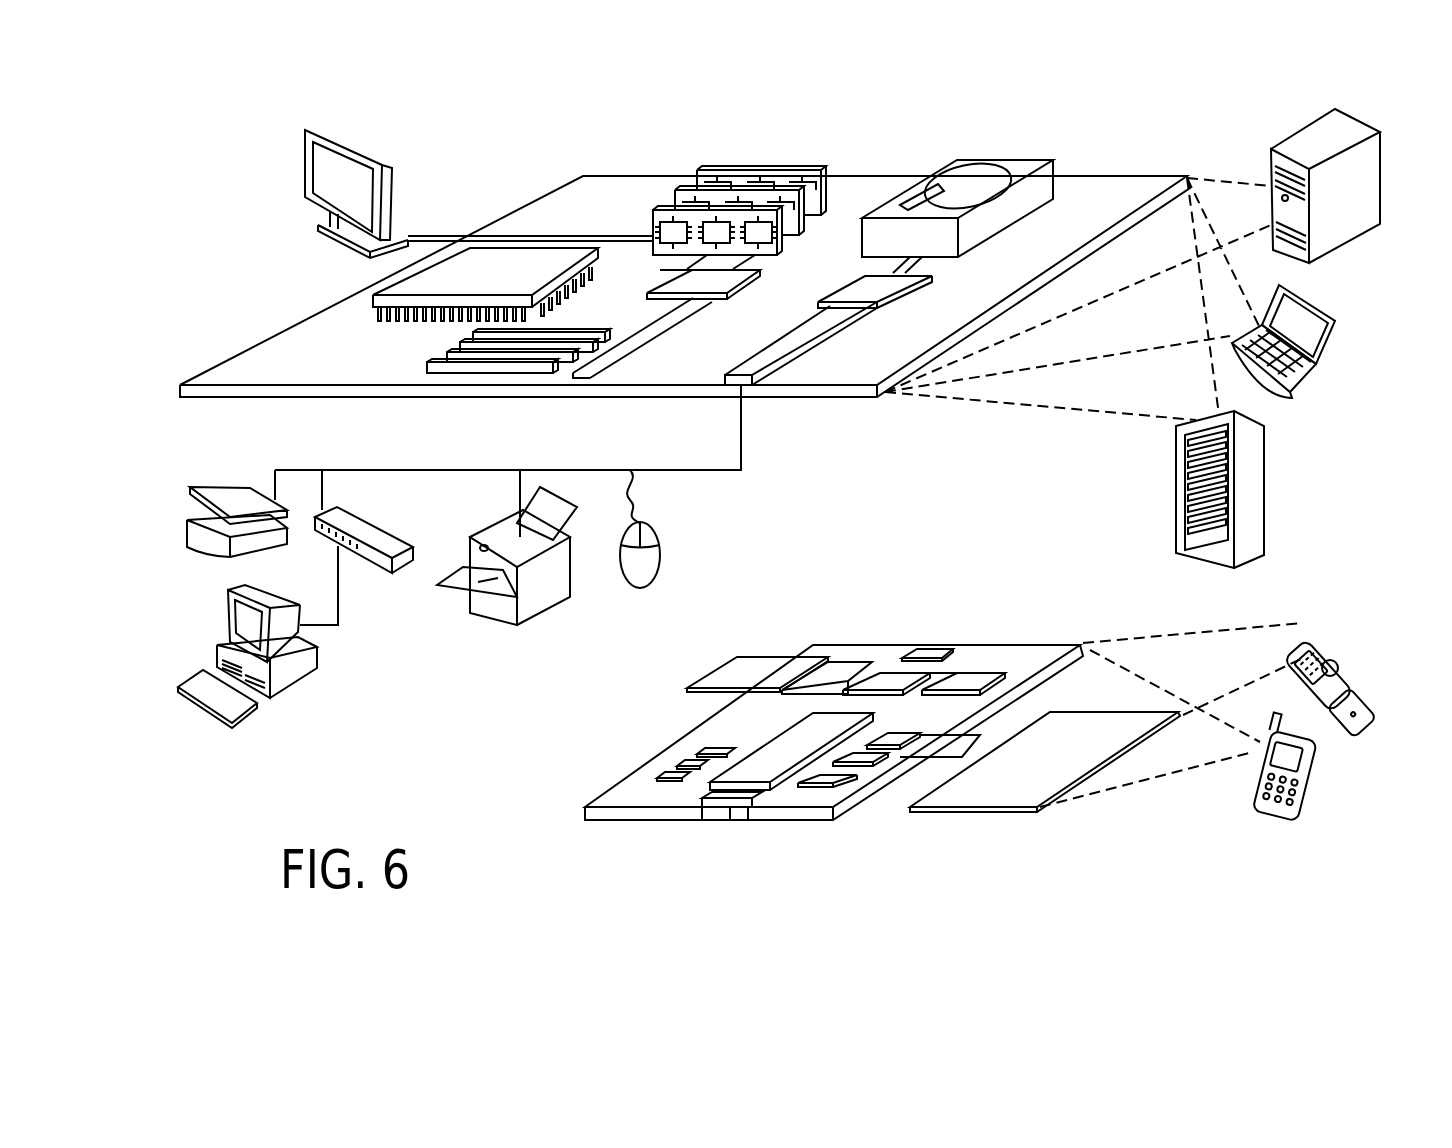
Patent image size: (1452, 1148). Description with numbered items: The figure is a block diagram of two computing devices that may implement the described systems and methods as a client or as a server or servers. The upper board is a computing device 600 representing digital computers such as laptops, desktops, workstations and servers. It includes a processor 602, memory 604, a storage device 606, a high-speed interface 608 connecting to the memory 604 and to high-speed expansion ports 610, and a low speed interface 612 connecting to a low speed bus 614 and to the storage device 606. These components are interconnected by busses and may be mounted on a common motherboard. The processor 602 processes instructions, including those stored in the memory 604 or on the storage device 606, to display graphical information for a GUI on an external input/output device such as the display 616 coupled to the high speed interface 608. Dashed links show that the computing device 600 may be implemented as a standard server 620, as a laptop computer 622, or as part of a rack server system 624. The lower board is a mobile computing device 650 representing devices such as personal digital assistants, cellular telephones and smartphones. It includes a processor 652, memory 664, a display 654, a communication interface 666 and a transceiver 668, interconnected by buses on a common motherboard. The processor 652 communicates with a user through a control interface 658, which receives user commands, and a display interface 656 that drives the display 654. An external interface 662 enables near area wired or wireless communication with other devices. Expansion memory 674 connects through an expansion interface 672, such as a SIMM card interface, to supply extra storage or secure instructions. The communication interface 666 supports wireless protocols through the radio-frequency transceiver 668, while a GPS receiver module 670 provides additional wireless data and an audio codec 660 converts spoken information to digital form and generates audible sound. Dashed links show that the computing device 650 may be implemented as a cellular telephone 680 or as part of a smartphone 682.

The computing device 600 is at (507, 151).
The processor 602 is at (372, 299).
The memory 604 is at (706, 176).
The storage device 606 is at (950, 160).
The high-speed interface 608 is at (683, 284).
The high-speed expansion ports 610 is at (450, 360).
The low speed interface 612 is at (847, 283).
The low speed bus 614 is at (752, 384).
The display 616 is at (307, 130).
The standard server 620 is at (1271, 160).
The laptop computer 622 is at (1336, 312).
The rack server system 624 is at (1176, 512).
The computing device 650 is at (558, 814).
The processor 652 is at (763, 773).
The display 654 is at (1003, 792).
The display interface 656 is at (837, 785).
The control interface 658 is at (870, 764).
The audio codec 660 is at (893, 741).
The external interface 662 is at (728, 806).
The memory 664 is at (673, 770).
The communication interface 666 is at (885, 682).
The transceiver 668 is at (963, 680).
The GPS receiver module 670 is at (930, 650).
The expansion interface 672 is at (813, 657).
The expansion memory 674 is at (744, 657).
The cellular telephone 680 is at (1323, 612).
The smartphone 682 is at (1256, 777).